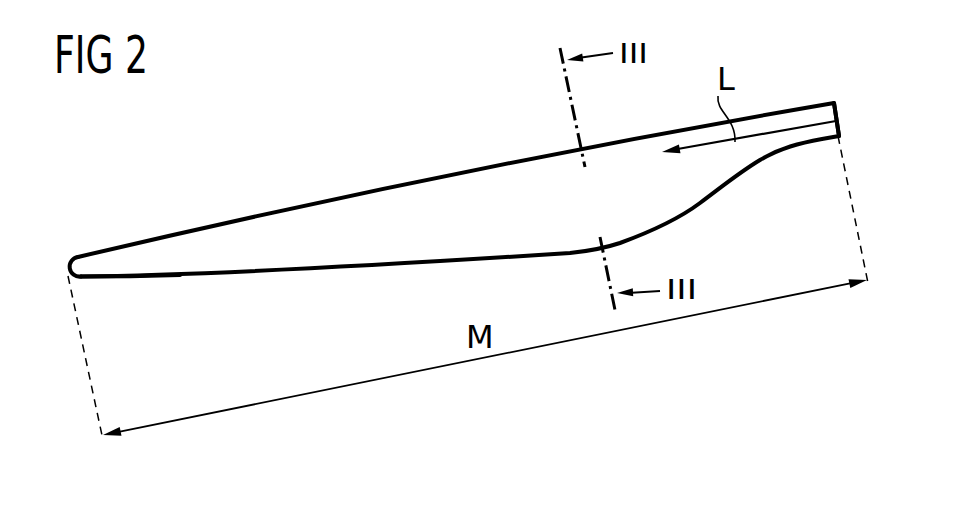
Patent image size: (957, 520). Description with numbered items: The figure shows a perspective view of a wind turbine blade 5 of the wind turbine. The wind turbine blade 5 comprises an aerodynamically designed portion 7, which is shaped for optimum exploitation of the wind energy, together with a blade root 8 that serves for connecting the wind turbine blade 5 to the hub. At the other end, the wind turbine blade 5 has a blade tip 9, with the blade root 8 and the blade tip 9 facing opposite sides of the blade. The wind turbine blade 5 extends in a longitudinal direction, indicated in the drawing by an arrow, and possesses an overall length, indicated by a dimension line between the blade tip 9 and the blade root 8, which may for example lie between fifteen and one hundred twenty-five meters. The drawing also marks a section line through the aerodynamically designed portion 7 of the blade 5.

The wind turbine blade 5 is at (416, 145).
The aerodynamically designed portion 7 is at (138, 255).
The blade root 8 is at (825, 112).
The blade tip 9 is at (71, 287).